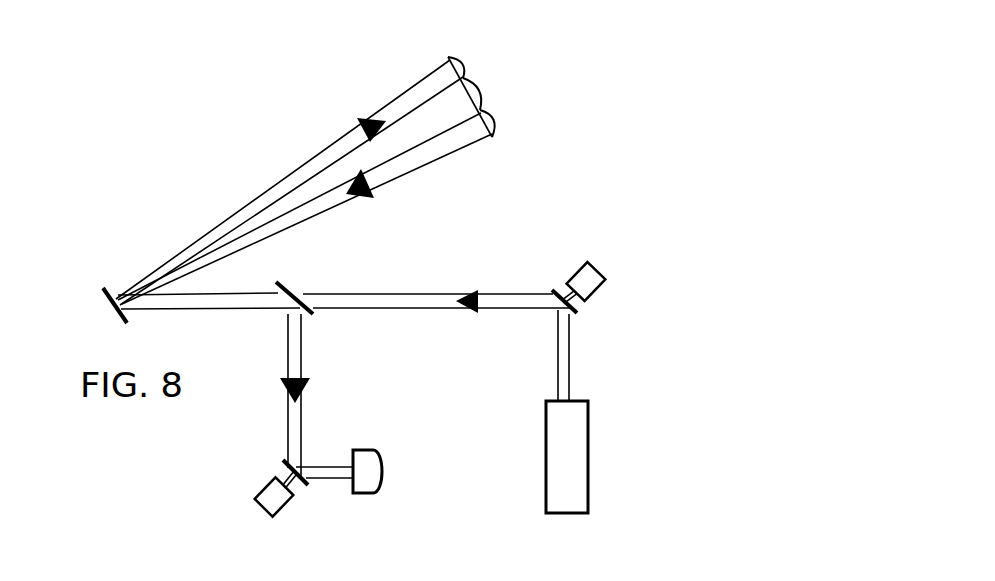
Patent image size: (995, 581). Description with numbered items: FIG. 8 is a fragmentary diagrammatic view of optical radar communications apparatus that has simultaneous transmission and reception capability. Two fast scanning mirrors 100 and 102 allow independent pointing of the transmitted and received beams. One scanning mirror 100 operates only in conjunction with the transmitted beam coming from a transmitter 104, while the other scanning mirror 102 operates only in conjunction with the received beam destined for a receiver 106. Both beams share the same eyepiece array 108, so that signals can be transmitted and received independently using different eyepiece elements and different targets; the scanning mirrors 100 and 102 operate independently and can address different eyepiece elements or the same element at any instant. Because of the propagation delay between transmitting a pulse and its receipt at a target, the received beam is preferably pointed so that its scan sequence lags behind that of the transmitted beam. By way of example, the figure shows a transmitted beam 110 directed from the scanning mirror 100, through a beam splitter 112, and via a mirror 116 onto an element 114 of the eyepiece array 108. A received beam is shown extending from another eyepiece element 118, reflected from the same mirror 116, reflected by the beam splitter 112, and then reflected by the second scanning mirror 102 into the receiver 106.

The fast scanning mirror 100 is at (603, 270).
The fast scanning mirror 102 is at (282, 507).
The transmitter 104 is at (587, 421).
The receiver 106 is at (382, 468).
The eyepiece array 108 is at (543, 79).
The transmitted beam 110 is at (437, 296).
The beam splitter 112 is at (277, 281).
The element of the eyepiece array 114 is at (458, 57).
The mirror 116 is at (105, 286).
The eyepiece element 118 is at (493, 118).